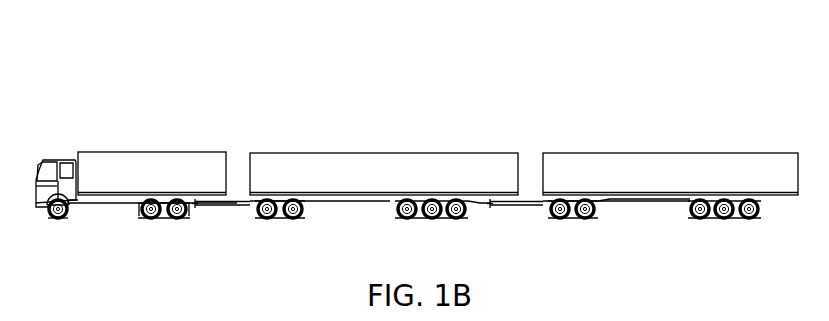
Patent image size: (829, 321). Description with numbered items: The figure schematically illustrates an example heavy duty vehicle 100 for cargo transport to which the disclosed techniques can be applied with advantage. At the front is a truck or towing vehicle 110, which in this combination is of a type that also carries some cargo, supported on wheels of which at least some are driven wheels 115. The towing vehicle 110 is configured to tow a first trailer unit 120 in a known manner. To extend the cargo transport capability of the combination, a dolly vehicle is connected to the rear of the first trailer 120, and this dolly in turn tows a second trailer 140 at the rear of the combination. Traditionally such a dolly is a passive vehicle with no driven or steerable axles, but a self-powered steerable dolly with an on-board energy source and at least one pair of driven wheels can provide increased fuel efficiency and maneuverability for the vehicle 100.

The vehicle 100 is at (86, 60).
The towing vehicle 110 is at (55, 160).
The driven wheels 115 is at (151, 218).
The first trailer unit 120 is at (312, 152).
The second trailer 140 is at (581, 152).